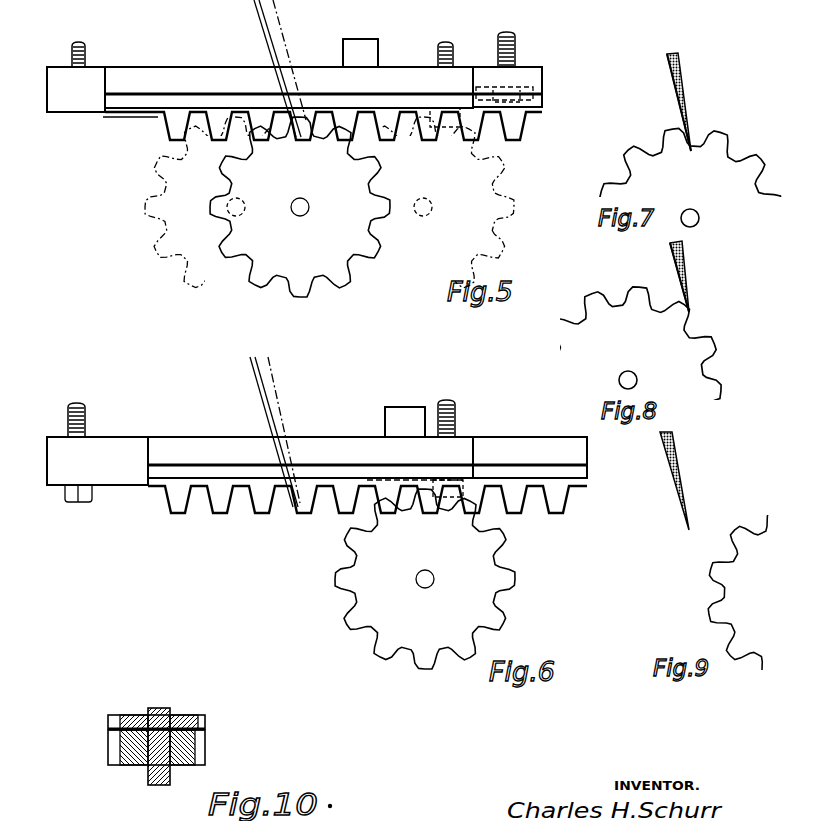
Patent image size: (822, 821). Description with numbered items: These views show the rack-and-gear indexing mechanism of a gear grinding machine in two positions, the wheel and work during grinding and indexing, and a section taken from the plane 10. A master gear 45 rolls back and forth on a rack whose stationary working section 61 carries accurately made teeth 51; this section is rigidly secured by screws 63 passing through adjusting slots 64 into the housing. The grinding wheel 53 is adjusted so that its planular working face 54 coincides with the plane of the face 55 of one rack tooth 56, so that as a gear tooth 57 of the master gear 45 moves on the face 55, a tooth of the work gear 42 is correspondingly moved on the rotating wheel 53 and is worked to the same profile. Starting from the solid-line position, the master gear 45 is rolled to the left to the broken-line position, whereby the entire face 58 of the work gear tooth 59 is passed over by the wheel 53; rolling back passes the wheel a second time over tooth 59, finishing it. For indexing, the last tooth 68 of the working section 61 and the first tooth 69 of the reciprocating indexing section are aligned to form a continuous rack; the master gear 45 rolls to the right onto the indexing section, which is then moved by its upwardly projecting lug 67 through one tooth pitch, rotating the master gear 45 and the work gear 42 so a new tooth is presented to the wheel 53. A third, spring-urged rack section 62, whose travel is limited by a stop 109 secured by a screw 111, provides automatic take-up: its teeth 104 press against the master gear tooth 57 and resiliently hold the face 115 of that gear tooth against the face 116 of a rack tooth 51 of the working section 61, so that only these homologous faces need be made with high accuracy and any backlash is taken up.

In FIG. 5, the plane 10 is at (120, 155).
In FIG. 7, the work gear 42 is at (658, 163).
In FIG. 8, the work gear 42 is at (681, 337).
In FIG. 9, the work gear 42 is at (743, 625).
In FIG. 5, the master gear 45 is at (173, 262).
In FIG. 6, the master gear 45 is at (362, 588).
In FIG. 5, the teeth 51 is at (212, 117).
In FIG. 6, the teeth 51 is at (216, 502).
In FIG. 10, the teeth 51 is at (205, 739).
In FIG. 5, the grinding wheel 53 is at (272, 15).
In FIG. 6, the grinding wheel 53 is at (276, 366).
In FIG. 7, the grinding wheel 53 is at (686, 83).
In FIG. 8, the grinding wheel 53 is at (688, 268).
In FIG. 9, the grinding wheel 53 is at (688, 491).
In FIG. 5, the planular working face 54 is at (263, 30).
In FIG. 6, the planular working face 54 is at (263, 403).
In FIG. 7, the planular working face 54 is at (677, 102).
In FIG. 5, the face 55 is at (300, 113).
In FIG. 6, the face 55 is at (300, 485).
In FIG. 5, the tooth 56 is at (298, 138).
In FIG. 6, the tooth 56 is at (302, 513).
In FIG. 5, the tooth 57 is at (278, 132).
In FIG. 6, the tooth 57 is at (347, 566).
In FIG. 10, the tooth 57 is at (160, 710).
In FIG. 8, the face 58 is at (686, 330).
In FIG. 7, the tooth 59 is at (687, 163).
In FIG. 8, the tooth 59 is at (680, 313).
In FIG. 10, the working section 61 is at (206, 750).
In FIG. 10, the rack section 62 is at (108, 723).
In FIG. 5, the screws 63 is at (86, 56).
In FIG. 8, the adjusting slots 64 is at (671, 263).
In FIG. 5, the lug 67 is at (360, 42).
In FIG. 6, the lug 67 is at (401, 410).
In FIG. 6, the last tooth 68 is at (338, 505).
In FIG. 5, the first tooth 69 is at (348, 122).
In FIG. 6, the first tooth 69 is at (384, 502).
In FIG. 10, the teeth 104 is at (133, 716).
In FIG. 5, the stop 109 is at (533, 86).
In FIG. 5, the screw 111 is at (517, 47).
In FIG. 10, the face 115 is at (180, 767).
In FIG. 10, the face 116 is at (148, 771).